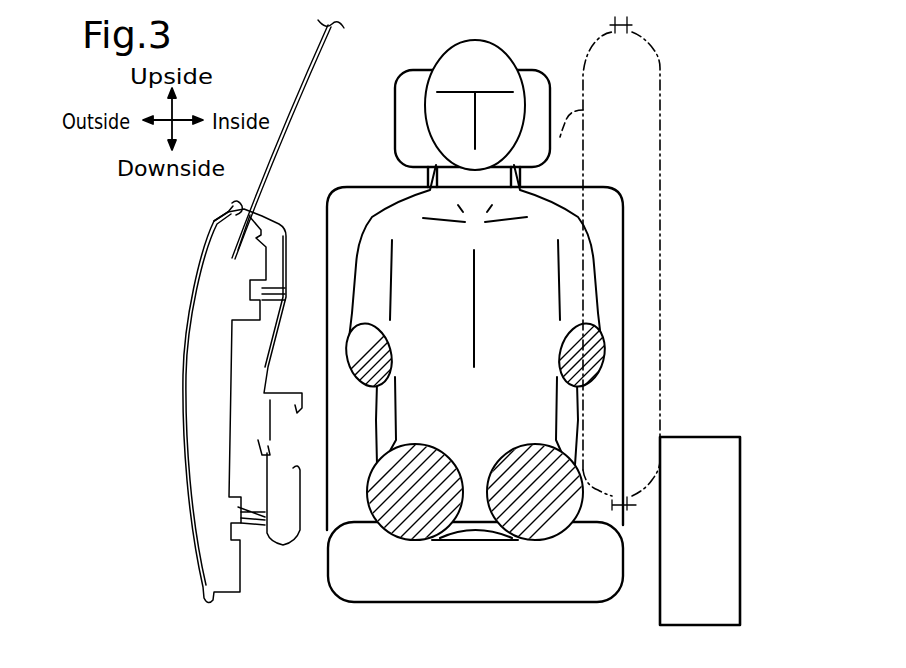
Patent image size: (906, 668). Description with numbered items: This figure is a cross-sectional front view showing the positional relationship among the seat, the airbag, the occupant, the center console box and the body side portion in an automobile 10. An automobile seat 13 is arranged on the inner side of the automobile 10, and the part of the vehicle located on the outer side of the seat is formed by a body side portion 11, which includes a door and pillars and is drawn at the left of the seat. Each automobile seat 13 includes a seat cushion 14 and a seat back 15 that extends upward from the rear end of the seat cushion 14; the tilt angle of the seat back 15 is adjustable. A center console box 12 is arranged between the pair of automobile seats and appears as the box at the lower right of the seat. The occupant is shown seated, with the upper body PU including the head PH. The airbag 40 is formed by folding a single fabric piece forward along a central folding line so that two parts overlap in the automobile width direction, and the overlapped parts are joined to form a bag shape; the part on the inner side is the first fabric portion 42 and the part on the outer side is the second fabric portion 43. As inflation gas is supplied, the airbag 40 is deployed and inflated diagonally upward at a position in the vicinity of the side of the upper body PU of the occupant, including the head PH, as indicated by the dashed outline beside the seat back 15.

The automobile 10 is at (112, 523).
The body side portion 11 is at (190, 302).
The center console box 12 is at (712, 436).
The automobile seat 13 is at (600, 605).
The seat cushion 14 is at (343, 565).
The seat back 15 is at (598, 198).
The airbag 40 is at (660, 263).
The first fabric portion 42 is at (662, 117).
The second fabric portion 43 is at (566, 122).
The head PH is at (498, 43).
The upper body PU is at (545, 289).